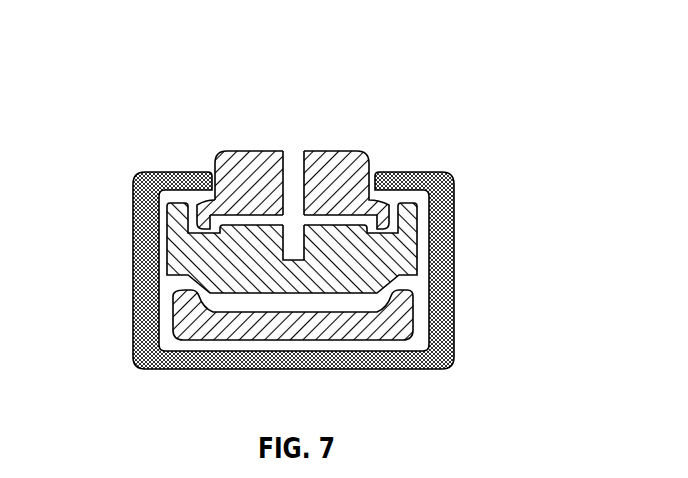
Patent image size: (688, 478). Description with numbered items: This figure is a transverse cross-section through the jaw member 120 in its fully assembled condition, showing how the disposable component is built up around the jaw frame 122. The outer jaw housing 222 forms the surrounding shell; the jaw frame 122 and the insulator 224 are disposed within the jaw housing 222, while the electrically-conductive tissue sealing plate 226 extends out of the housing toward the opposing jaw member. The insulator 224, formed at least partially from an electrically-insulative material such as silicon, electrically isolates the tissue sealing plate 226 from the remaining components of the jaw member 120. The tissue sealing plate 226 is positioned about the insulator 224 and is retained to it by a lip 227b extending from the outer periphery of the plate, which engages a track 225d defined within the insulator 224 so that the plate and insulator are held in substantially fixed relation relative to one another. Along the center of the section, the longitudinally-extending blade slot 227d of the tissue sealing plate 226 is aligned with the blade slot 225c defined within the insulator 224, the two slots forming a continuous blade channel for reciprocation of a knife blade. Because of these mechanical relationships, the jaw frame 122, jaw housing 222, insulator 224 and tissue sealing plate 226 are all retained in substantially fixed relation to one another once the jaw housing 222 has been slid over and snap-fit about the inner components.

The jaw member 120 is at (278, 213).
The jaw housing 222 is at (442, 256).
The tissue sealing plate 226 is at (241, 159).
The lip 227b is at (188, 232).
The blade slot 227d is at (293, 159).
The insulator 224 is at (233, 308).
The track 225d is at (200, 222).
The blade slot 225c is at (293, 245).
The jaw frame 122 is at (213, 328).